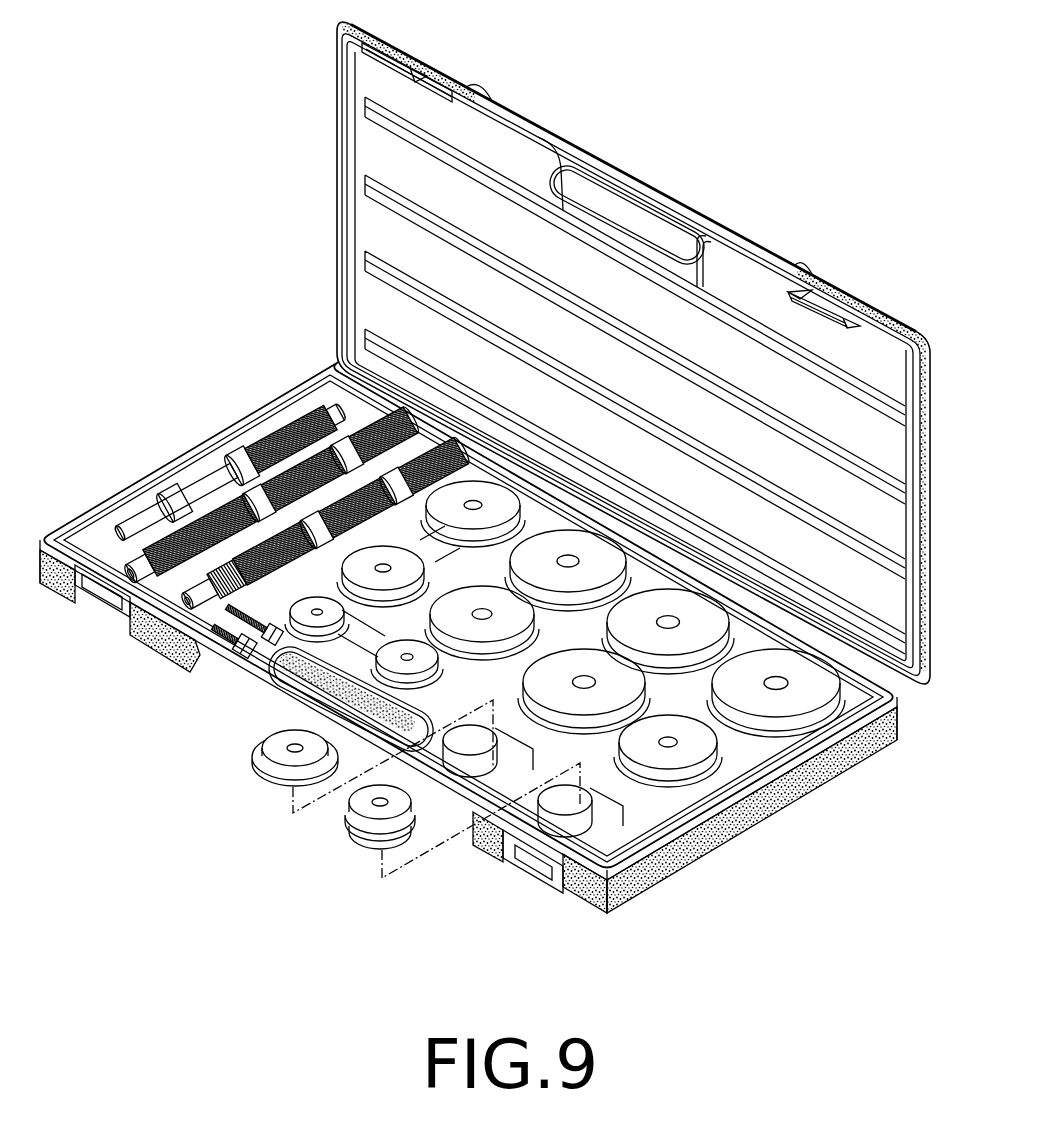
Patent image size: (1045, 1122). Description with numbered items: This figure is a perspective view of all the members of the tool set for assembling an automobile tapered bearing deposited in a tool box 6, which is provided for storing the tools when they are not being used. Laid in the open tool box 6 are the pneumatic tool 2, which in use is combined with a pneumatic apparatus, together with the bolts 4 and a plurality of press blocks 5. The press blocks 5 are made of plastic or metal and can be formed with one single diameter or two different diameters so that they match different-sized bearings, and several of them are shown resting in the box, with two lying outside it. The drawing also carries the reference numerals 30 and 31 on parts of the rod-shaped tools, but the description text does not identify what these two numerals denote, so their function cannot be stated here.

The pneumatic tool 2 is at (468, 634).
The bolts 4 is at (230, 613).
The press blocks 5 is at (273, 764).
The tool box 6 is at (845, 300).
The threaded rod 30 is at (203, 590).
The punch pin 31 is at (143, 557).